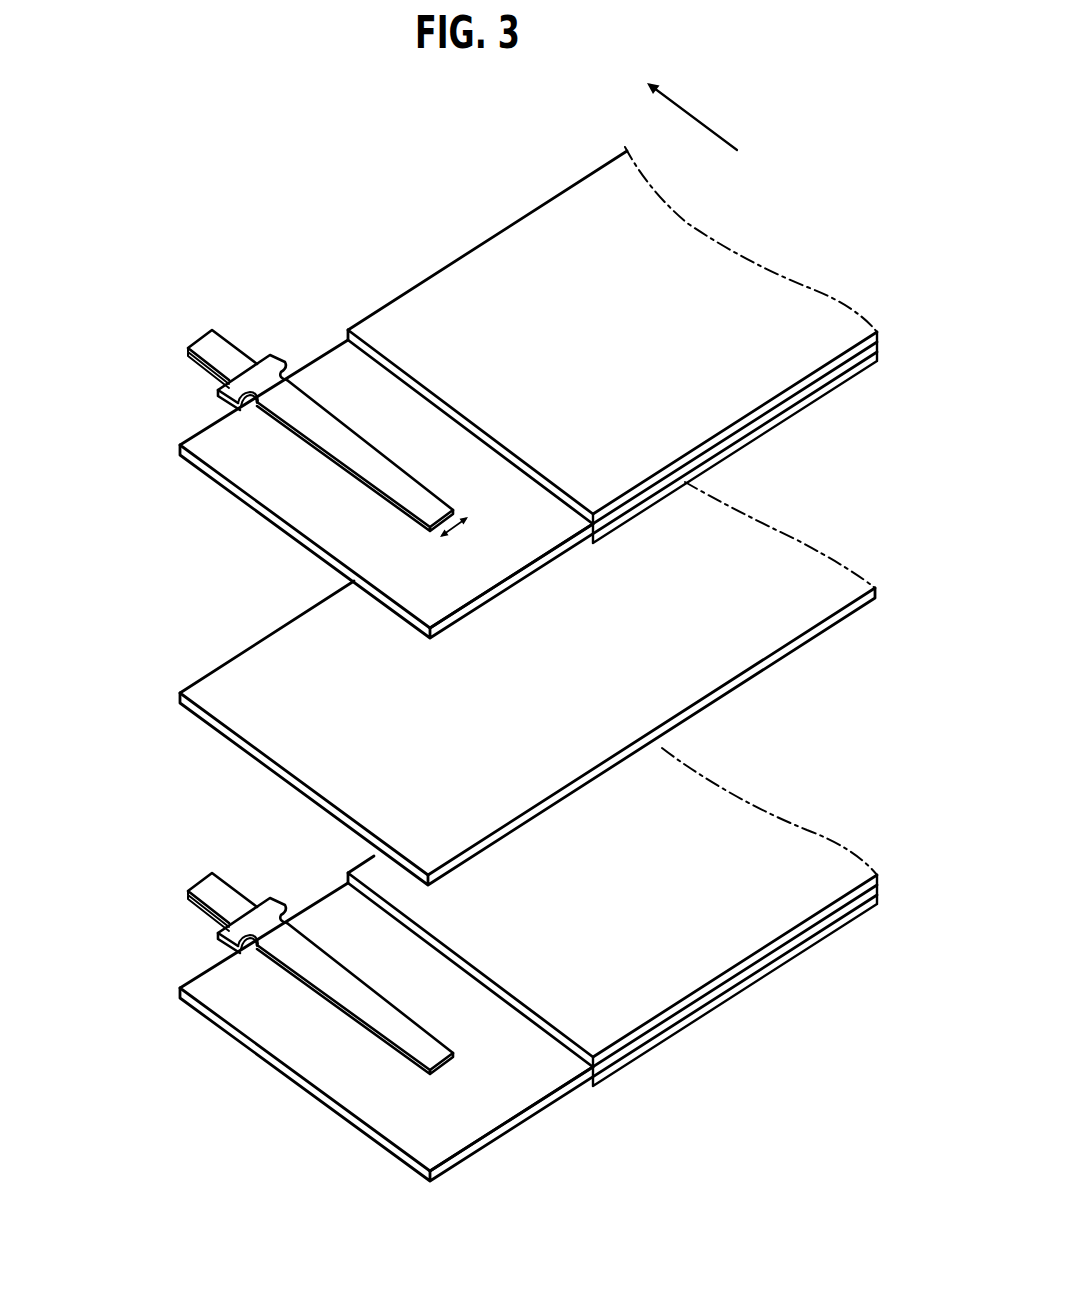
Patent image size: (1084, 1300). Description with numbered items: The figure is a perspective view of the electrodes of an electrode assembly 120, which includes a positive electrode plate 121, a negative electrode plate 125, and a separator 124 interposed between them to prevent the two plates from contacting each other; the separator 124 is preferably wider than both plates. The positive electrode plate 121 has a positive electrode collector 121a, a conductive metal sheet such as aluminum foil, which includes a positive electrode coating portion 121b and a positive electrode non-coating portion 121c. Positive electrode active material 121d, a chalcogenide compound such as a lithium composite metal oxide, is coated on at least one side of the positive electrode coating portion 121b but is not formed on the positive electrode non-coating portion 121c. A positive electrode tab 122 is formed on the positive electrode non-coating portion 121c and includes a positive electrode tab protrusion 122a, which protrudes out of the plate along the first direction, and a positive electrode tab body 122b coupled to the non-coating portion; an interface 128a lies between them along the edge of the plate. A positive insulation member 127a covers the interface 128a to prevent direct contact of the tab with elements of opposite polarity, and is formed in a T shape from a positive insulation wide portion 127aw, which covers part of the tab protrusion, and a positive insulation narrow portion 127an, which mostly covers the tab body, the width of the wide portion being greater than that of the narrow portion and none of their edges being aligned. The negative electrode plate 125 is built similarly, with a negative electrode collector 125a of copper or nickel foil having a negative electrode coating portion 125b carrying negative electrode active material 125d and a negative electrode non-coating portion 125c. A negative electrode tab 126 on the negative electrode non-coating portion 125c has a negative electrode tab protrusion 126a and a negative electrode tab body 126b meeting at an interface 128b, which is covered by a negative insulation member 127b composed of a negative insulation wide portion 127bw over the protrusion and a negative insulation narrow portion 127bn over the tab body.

The electrode assembly 120 is at (203, 152).
The positive electrode plate 121 is at (215, 488).
The positive electrode collector 121a is at (277, 520).
The positive electrode coating portion 121b is at (722, 268).
The positive electrode non-coating portion 121c is at (462, 589).
The positive electrode active material 121d is at (876, 332).
The positive electrode tab 122 is at (119, 292).
The positive electrode tab protrusion 122a is at (203, 347).
The positive electrode tab body 122b is at (223, 395).
The separator 124 is at (212, 683).
The negative electrode plate 125 is at (499, 960).
The negative electrode collector 125a is at (528, 1032).
The negative electrode coating portion 125b is at (612, 903).
The negative electrode non-coating portion 125c is at (500, 1119).
The negative electrode active material 125d is at (755, 950).
The negative electrode tab 126 is at (168, 886).
The negative electrode tab protrusion 126a is at (194, 879).
The negative electrode tab body 126b is at (182, 910).
The positive insulation member 127a is at (278, 363).
The positive insulation wide portion 127aw is at (256, 384).
The positive insulation narrow portion 127an is at (289, 374).
The negative insulation member 127b is at (307, 923).
The negative insulation wide portion 127bw is at (224, 863).
The negative insulation narrow portion 127bn is at (355, 962).
The interface 128a is at (228, 405).
The interface 128b is at (175, 952).